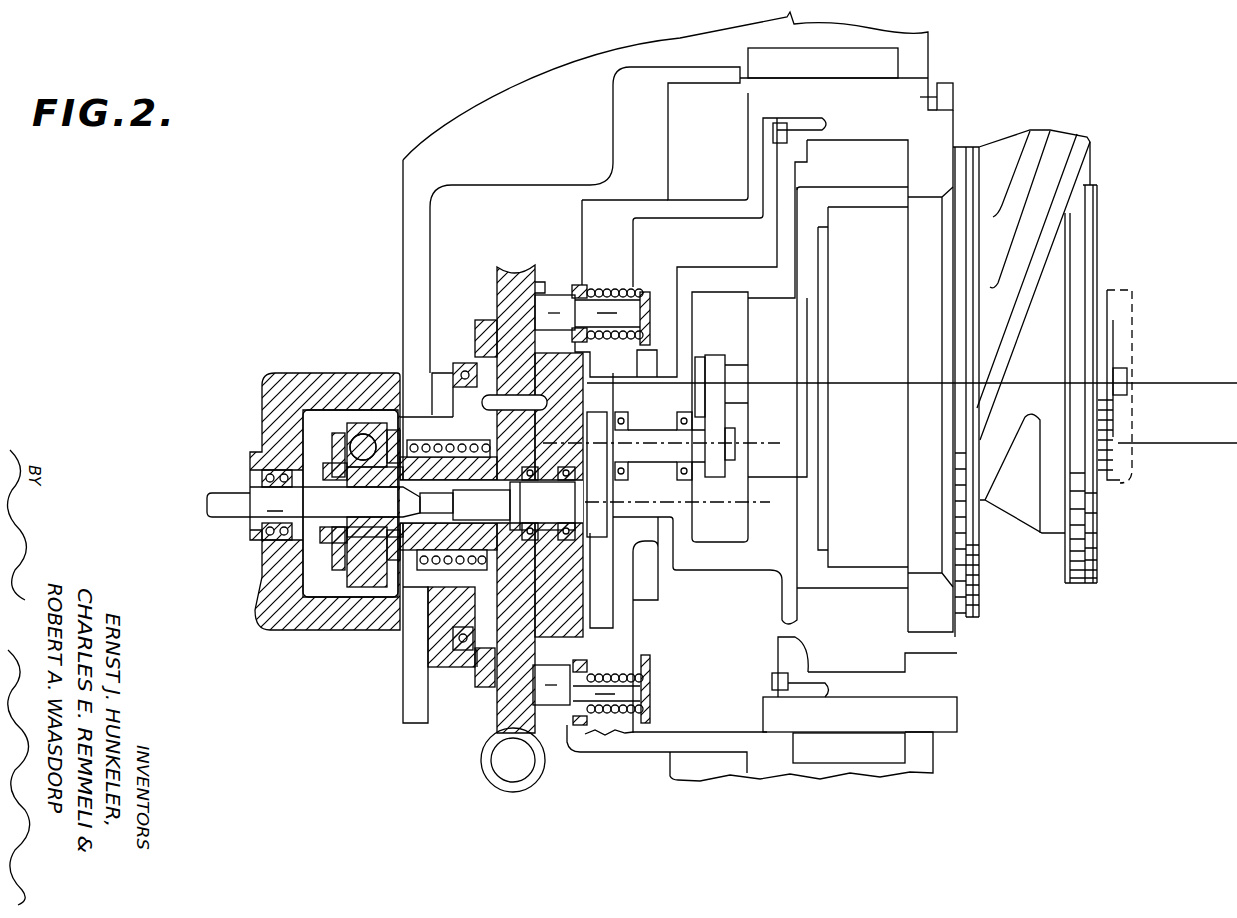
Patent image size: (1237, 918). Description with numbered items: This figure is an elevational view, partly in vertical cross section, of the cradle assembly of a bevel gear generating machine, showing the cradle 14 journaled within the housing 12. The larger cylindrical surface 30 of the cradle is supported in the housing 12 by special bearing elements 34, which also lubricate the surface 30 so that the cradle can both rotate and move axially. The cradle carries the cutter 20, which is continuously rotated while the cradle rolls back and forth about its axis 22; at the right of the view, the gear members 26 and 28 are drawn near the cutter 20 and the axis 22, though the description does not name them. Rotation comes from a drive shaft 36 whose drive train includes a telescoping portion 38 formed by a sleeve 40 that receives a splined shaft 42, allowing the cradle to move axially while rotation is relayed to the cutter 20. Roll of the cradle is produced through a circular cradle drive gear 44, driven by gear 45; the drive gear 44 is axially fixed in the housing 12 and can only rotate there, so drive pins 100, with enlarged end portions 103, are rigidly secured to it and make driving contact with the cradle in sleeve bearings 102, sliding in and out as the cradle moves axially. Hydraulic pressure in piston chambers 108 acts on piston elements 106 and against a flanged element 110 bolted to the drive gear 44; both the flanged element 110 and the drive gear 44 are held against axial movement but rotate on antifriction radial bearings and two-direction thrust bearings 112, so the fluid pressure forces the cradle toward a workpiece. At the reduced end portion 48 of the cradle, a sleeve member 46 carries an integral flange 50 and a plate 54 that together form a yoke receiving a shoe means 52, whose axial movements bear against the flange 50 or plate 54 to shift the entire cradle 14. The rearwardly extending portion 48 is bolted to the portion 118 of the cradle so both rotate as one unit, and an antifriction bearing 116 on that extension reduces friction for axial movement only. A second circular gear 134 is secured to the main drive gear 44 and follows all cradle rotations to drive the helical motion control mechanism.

The housing 12 is at (540, 155).
The cradle 14 is at (953, 95).
The cutter 20 is at (1133, 288).
The axis 22 is at (1192, 438).
The helical gear 26 is at (1050, 128).
The gear 28 is at (1098, 200).
The larger cylindrical surface 30 is at (832, 72).
The bearing elements 34 is at (892, 62).
The drive shaft 36 is at (238, 519).
The telescoping portion 38 is at (262, 575).
The sleeve 40 is at (347, 545).
The splined shaft 42 is at (341, 507).
The cradle drive gear 44 is at (514, 262).
The gear 45 is at (518, 793).
The sleeve member 46 is at (345, 460).
The reduced end portion 48 is at (491, 495).
The flange 50 is at (396, 440).
The shoe means 52 is at (357, 415).
The plate 54 is at (345, 430).
The drive pins 100 is at (552, 298).
The sleeve bearings 102 is at (607, 287).
The enlarged end portions 103 is at (652, 292).
The piston elements 106 is at (518, 383).
The piston chambers 108 is at (445, 397).
The flanged element 110 is at (388, 650).
The thrust bearings 112 is at (466, 360).
The antifriction bearing 116 is at (462, 590).
The portion of the cradle 118 is at (627, 613).
The second circular gear 134 is at (483, 690).